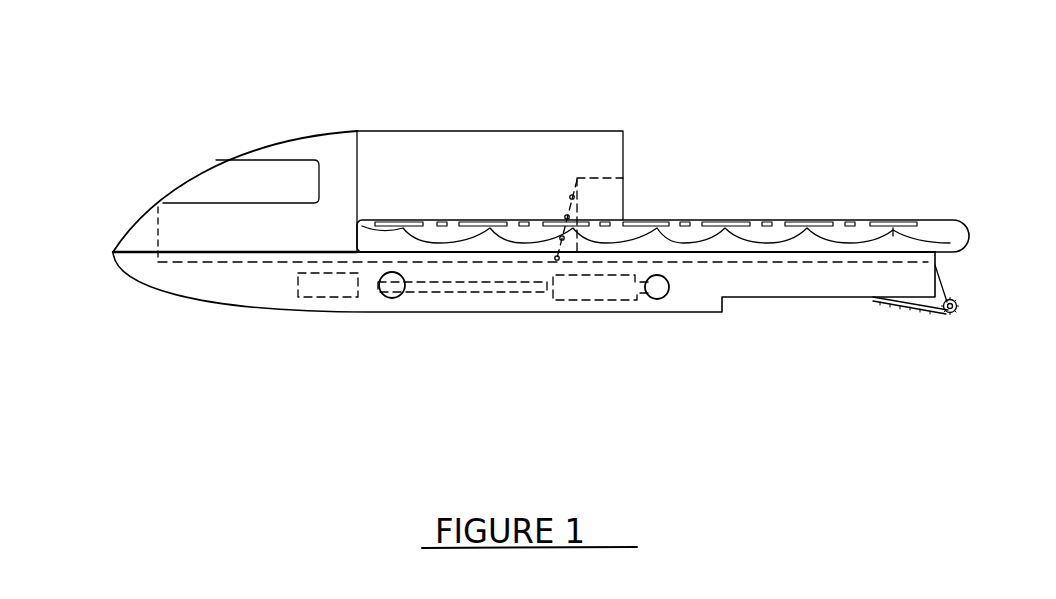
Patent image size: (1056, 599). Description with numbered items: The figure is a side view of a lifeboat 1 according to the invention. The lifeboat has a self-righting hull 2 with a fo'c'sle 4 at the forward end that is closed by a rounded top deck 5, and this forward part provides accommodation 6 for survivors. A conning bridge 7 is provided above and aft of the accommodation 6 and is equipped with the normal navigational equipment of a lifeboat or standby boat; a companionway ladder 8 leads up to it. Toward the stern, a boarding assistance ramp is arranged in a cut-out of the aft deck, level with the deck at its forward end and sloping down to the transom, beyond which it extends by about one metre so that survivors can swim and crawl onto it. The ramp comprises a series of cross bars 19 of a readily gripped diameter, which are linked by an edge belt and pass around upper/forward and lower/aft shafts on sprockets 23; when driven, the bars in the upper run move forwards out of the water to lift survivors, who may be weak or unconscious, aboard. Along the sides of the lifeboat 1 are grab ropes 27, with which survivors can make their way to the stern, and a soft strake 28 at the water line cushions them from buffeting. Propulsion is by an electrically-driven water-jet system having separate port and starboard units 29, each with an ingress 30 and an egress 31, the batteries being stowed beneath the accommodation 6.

The lifeboat 1 is at (740, 93).
The self-righting hull 2 is at (175, 273).
The fo'c'sle 4 is at (130, 207).
The rounded top deck 5 is at (260, 143).
The accommodation 6 is at (222, 262).
The conning bridge 7 is at (188, 163).
The companionway ladder 8 is at (567, 217).
The cross bars 19 is at (910, 330).
The sprockets 23 is at (952, 300).
The grab ropes 27 is at (523, 243).
The soft strake 28 is at (380, 237).
The port and starboard units 29 is at (613, 300).
The ingresses 30 is at (400, 297).
The egresses 31 is at (662, 298).